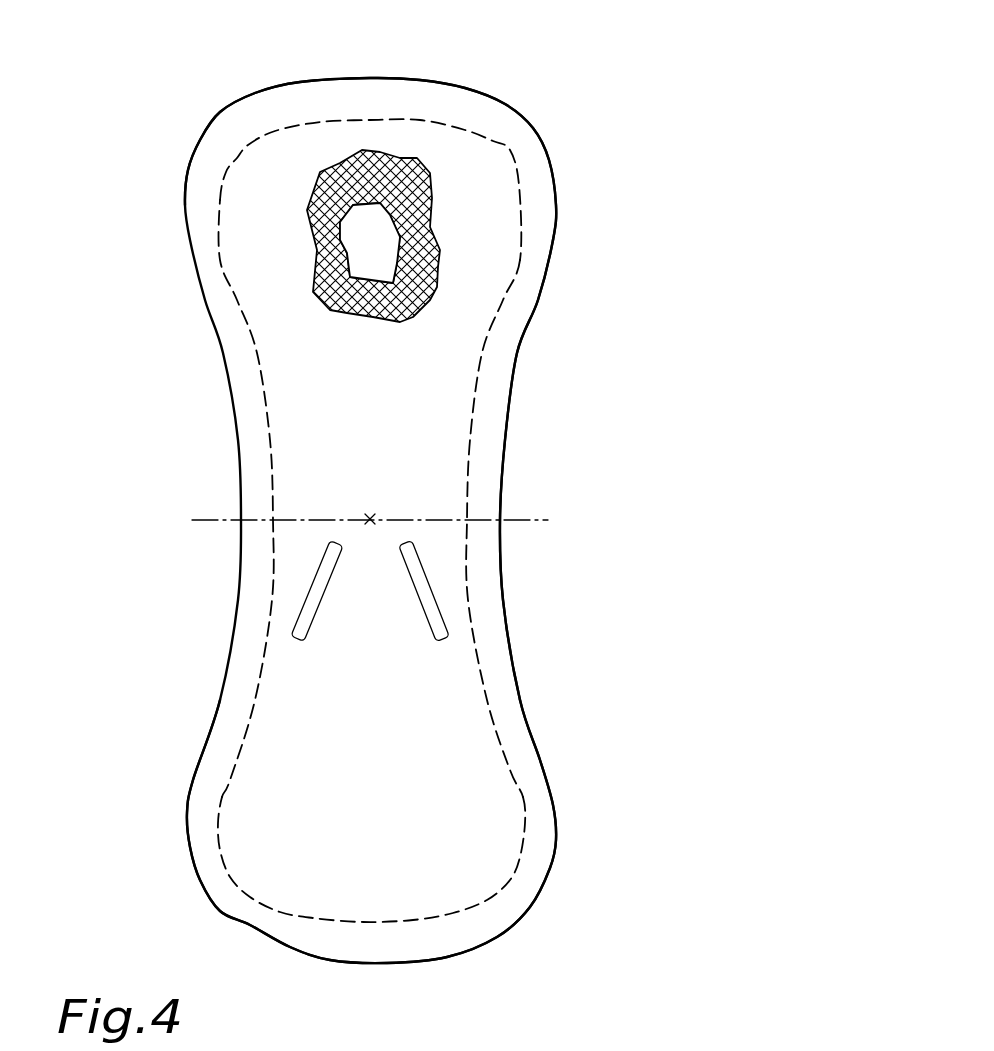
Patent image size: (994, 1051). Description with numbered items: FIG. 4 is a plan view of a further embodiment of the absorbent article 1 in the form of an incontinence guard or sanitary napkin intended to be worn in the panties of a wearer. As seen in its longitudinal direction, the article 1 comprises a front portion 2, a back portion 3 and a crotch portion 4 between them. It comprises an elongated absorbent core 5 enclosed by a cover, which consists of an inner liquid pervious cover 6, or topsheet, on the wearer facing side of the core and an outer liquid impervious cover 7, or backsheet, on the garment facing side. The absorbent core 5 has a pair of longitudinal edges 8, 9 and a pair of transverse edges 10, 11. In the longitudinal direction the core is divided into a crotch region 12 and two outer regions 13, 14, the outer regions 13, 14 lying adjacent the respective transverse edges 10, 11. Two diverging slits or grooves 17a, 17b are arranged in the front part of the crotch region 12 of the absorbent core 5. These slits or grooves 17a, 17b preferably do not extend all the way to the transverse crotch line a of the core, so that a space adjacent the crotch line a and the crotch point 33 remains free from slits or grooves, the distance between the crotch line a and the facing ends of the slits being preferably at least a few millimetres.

The absorbent article 1 is at (594, 79).
The front portion 2 is at (557, 835).
The back portion 3 is at (554, 207).
The crotch portion 4 is at (503, 460).
The absorbent core 5 is at (340, 311).
The inner liquid pervious cover 6 is at (282, 206).
The outer liquid impervious cover 7 is at (381, 259).
The longitudinal edge 8 is at (478, 397).
The longitudinal edge 9 is at (272, 443).
The transverse edge 10 is at (363, 921).
The transverse edge 11 is at (362, 120).
The crotch region 12 is at (453, 542).
The outer region 13 is at (422, 785).
The outer region 14 is at (458, 176).
The slit or groove 17a is at (310, 618).
The slit or groove 17b is at (426, 618).
The crotch point 33 is at (370, 515).
The transverse crotch line a is at (216, 522).